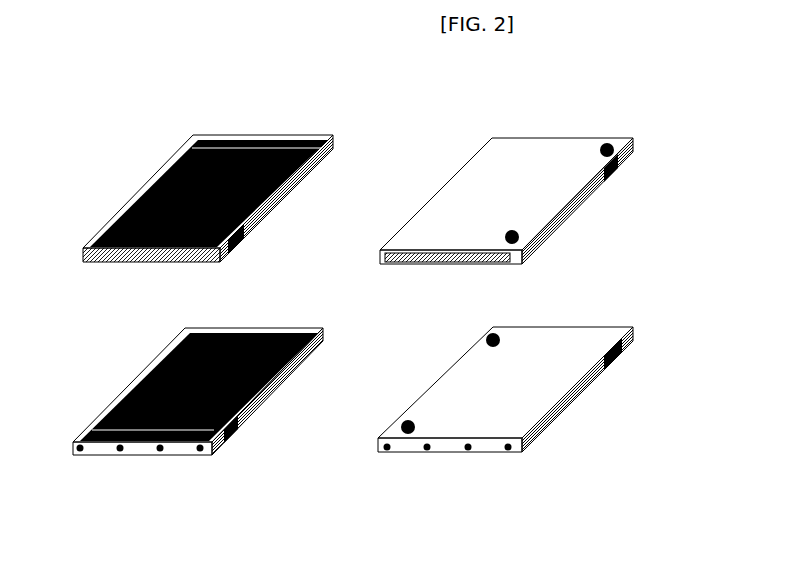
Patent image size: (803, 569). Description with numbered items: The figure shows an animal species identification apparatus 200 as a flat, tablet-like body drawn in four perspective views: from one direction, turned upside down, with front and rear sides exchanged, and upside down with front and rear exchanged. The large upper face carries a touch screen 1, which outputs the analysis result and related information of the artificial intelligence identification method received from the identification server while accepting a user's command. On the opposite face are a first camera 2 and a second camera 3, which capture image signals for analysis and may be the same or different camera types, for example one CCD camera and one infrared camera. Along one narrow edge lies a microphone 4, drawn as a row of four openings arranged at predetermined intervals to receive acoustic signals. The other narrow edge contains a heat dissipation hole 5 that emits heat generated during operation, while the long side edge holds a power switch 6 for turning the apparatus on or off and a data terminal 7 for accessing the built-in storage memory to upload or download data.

The animal species identification apparatus 200 is at (348, 290).
The touch screen 1 is at (190, 180).
The first camera 2 is at (504, 238).
The second camera 3 is at (599, 149).
The microphone 4 is at (198, 453).
The heat dissipation hole 5 is at (150, 264).
The power switch 6 is at (619, 174).
The data terminal 7 is at (242, 244).